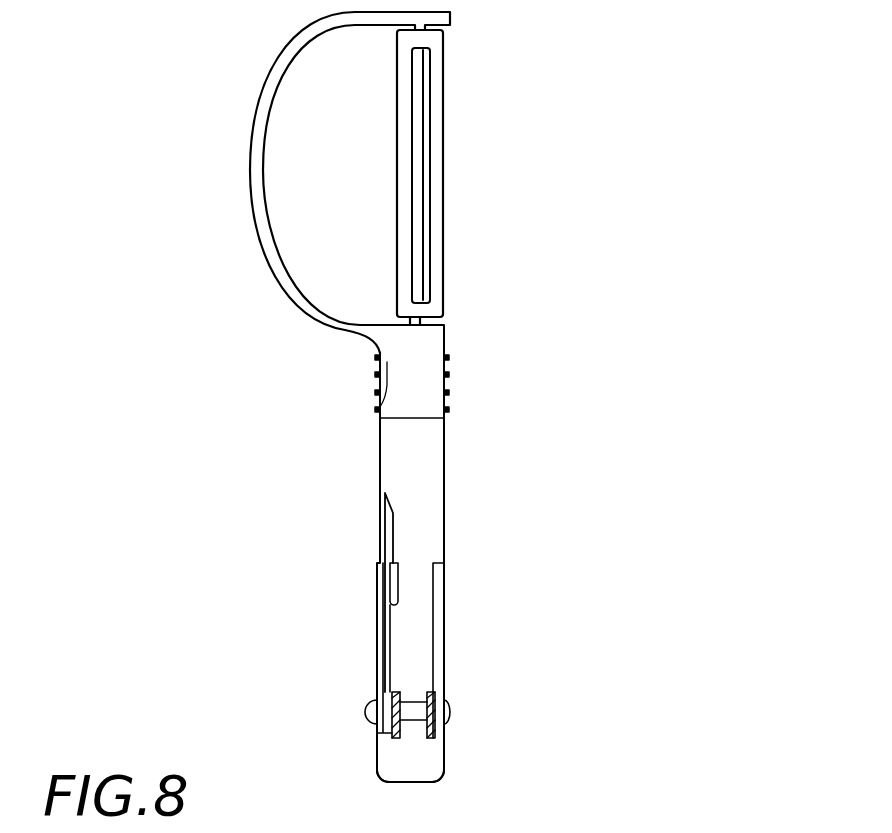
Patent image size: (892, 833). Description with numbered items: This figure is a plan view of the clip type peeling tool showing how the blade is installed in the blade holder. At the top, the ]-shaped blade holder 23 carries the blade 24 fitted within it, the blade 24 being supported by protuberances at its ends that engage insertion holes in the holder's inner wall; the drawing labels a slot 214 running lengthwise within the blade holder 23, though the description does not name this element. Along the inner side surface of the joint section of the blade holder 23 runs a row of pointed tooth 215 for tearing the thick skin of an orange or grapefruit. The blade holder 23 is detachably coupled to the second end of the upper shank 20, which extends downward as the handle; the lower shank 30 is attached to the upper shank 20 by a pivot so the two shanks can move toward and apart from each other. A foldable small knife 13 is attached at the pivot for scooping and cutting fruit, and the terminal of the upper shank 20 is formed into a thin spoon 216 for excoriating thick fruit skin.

The blade holder 23 is at (233, 135).
The blade 24 is at (438, 50).
The slot 214 is at (427, 148).
The pointed tooth 215 is at (385, 364).
The upper shank 20 is at (428, 465).
The foldable small knife 13 is at (388, 533).
The lower shank 30 is at (388, 715).
The thin spoon 216 is at (423, 760).